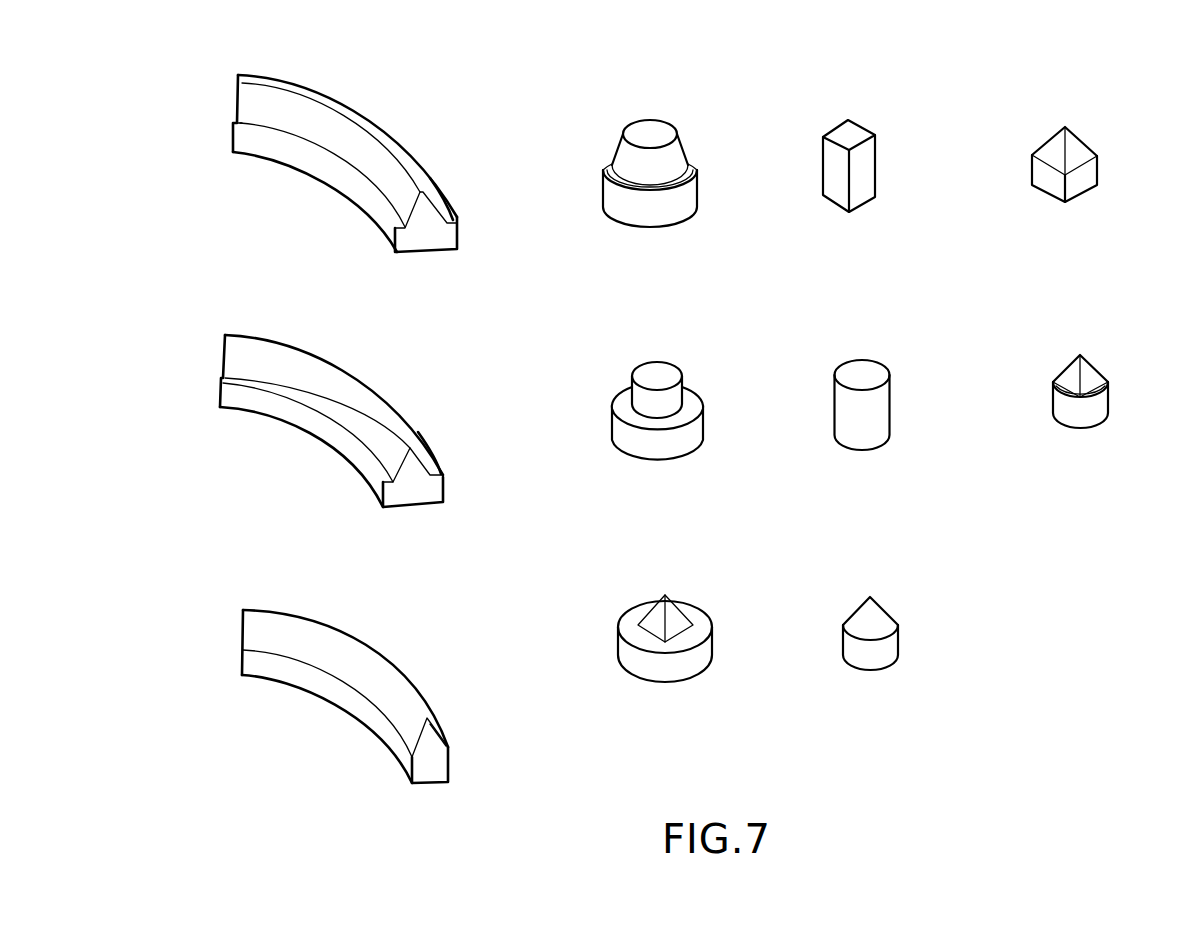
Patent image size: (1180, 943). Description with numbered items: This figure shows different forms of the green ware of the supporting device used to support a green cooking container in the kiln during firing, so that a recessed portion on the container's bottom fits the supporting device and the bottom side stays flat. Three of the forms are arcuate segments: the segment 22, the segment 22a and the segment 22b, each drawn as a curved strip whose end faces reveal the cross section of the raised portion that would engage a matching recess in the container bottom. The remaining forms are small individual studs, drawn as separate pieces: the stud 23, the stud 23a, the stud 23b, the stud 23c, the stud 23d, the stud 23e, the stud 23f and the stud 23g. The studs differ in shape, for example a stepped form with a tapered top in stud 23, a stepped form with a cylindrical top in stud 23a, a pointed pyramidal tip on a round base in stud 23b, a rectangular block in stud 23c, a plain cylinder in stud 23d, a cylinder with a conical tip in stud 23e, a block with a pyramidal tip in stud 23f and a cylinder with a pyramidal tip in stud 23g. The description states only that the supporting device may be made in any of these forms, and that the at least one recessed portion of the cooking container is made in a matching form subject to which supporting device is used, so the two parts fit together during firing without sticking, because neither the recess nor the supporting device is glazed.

The arcuate segment with rim 22 is at (381, 127).
The arcuate segment with grooved rim 22a is at (367, 382).
The arcuate segment with ridge 22b is at (383, 658).
The stepped frustoconical stud 23 is at (682, 140).
The stepped cylindrical stud 23a is at (677, 363).
The cylindrical stud with pyramidal tip 23b is at (668, 598).
The rectangular block stud 23c is at (860, 132).
The cylindrical stud 23d is at (880, 370).
The cylindrical stud with conical tip 23e is at (880, 607).
The block stud with pyramidal tip 23f is at (1078, 143).
The cylindrical stud with pyramidal tip 23g is at (1090, 380).